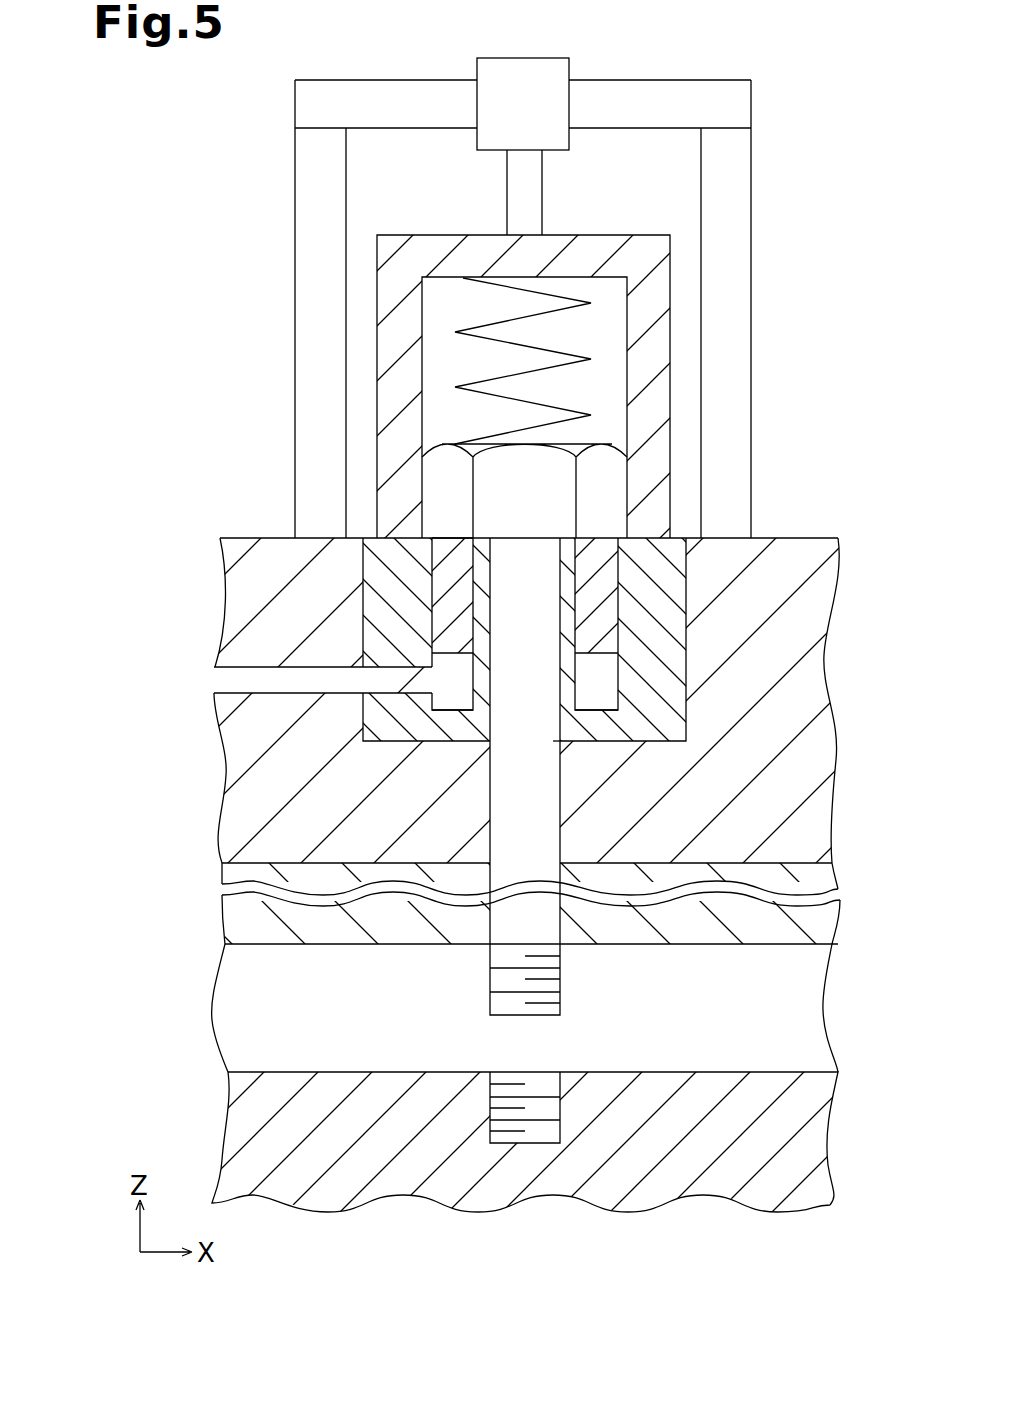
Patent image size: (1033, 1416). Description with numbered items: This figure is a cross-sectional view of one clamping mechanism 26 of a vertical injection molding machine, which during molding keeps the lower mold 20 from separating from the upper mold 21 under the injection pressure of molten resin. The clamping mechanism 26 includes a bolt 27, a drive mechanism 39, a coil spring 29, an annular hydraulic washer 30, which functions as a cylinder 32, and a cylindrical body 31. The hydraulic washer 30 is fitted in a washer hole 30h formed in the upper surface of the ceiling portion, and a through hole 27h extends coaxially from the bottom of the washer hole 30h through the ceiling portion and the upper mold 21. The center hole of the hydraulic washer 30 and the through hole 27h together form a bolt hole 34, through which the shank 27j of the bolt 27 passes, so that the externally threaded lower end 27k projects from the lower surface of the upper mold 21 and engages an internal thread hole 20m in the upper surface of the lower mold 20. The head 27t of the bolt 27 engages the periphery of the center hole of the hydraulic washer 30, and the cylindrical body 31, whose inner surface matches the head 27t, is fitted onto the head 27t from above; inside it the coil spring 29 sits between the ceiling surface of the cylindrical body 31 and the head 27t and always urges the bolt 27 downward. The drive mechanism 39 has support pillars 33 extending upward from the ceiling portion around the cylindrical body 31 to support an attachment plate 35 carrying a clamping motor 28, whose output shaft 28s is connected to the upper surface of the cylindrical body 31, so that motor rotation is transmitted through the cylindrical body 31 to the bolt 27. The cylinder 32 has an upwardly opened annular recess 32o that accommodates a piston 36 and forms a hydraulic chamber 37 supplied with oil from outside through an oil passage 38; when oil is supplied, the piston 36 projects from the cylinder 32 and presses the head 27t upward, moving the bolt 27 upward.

The lower mold 20 is at (525, 1123).
The internal thread hole 20m is at (505, 1090).
The upper mold 21 is at (702, 932).
The clamping mechanism 26 is at (554, 271).
The bolt 27 is at (546, 706).
The head 27t is at (445, 457).
The through hole 27h is at (495, 778).
The shank 27j is at (500, 833).
The lower end 27k is at (560, 980).
The clamping motor 28 is at (520, 72).
The output shaft 28s is at (514, 193).
The coil spring 29 is at (567, 347).
The hydraulic washer 30 is at (498, 700).
The washer hole 30h is at (368, 590).
The cylindrical body 31 is at (595, 248).
The cylinder 32 is at (548, 633).
The annular recess 32o is at (437, 540).
The support pillar 33 is at (742, 273).
The bolt hole 34 is at (555, 735).
The attachment plate 35 is at (740, 106).
The piston 36 is at (598, 553).
The hydraulic chamber 37 is at (435, 656).
The oil passage 38 is at (215, 675).
The drive mechanism 39 is at (531, 124).